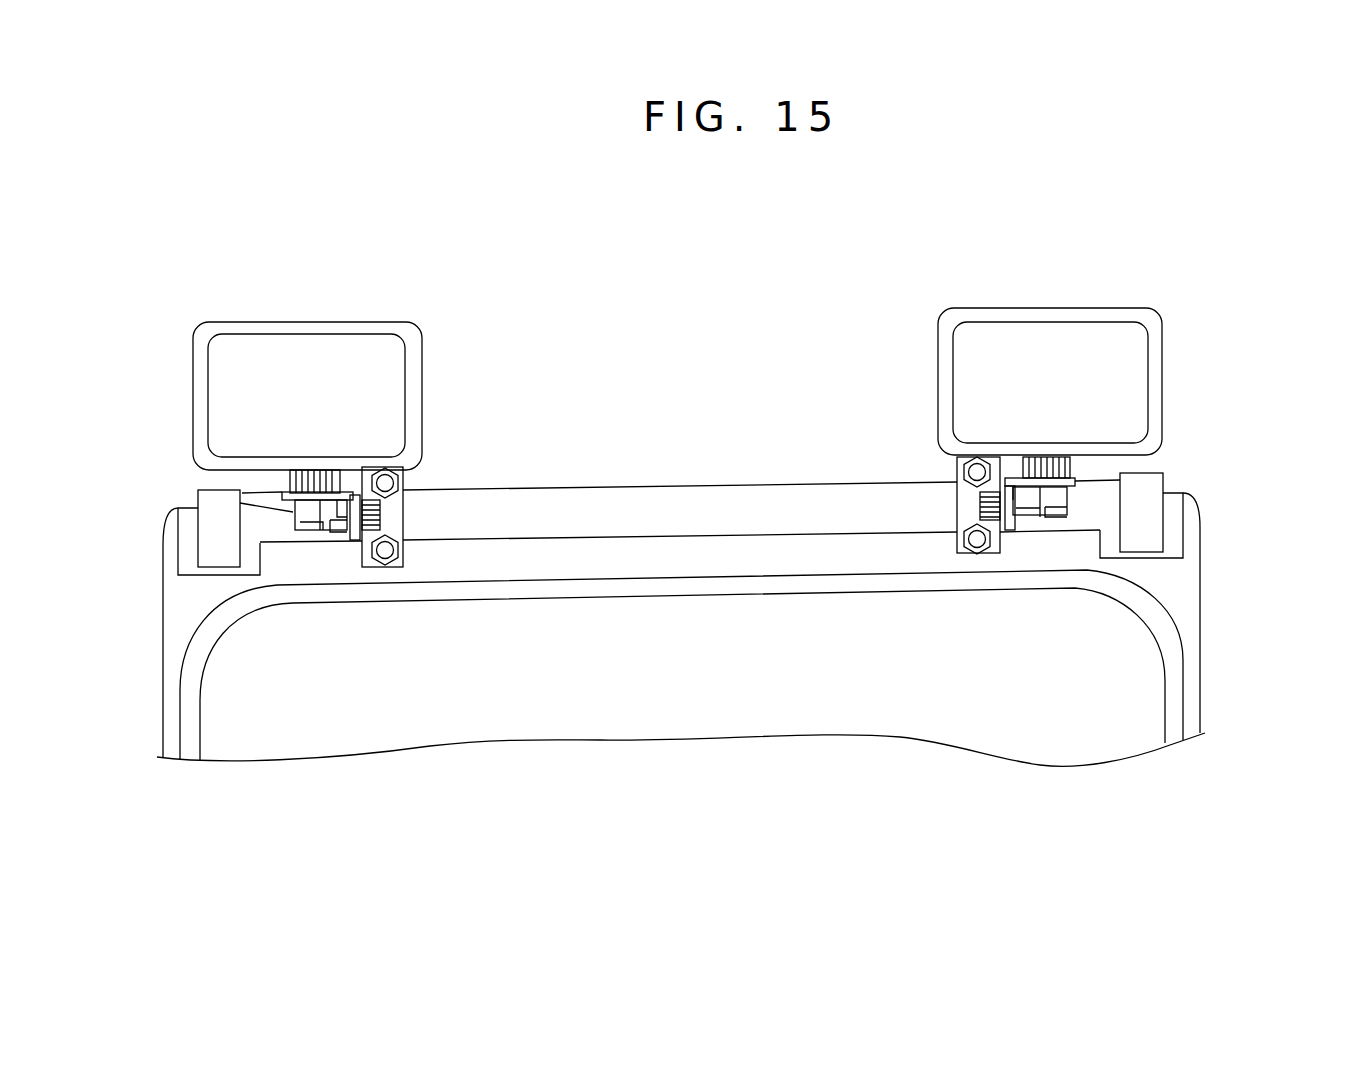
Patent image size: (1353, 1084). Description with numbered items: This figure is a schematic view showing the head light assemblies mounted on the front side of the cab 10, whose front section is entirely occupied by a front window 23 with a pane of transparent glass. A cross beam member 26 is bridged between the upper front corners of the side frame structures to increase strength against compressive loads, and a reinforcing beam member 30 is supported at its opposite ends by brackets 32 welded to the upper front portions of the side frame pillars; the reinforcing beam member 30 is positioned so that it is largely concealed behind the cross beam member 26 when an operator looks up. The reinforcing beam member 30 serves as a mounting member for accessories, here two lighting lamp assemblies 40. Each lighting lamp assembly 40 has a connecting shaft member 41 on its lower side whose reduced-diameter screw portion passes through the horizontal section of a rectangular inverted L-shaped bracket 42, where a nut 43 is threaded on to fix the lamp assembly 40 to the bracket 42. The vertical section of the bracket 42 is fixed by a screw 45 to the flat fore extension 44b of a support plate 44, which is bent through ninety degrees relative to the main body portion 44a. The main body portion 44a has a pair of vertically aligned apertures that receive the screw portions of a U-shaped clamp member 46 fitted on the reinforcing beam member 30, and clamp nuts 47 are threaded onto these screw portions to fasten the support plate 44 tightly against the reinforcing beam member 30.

The cab 10 is at (663, 395).
The front window 23 is at (688, 667).
The cross beam member 26 is at (750, 560).
The reinforcing beam member 30 is at (710, 495).
The bracket 32 is at (230, 557).
The lighting lamp assembly 40 is at (292, 322).
The connecting shaft member 41 is at (297, 487).
The bracket 42 is at (340, 488).
The nut 43 is at (230, 502).
The support plate 44 is at (403, 578).
The main body portion 44a is at (405, 508).
The flat fore extension 44b is at (357, 495).
The screw 45 is at (370, 528).
The U-shaped clamp member 46 is at (385, 553).
The clamp nut 47 is at (397, 482).